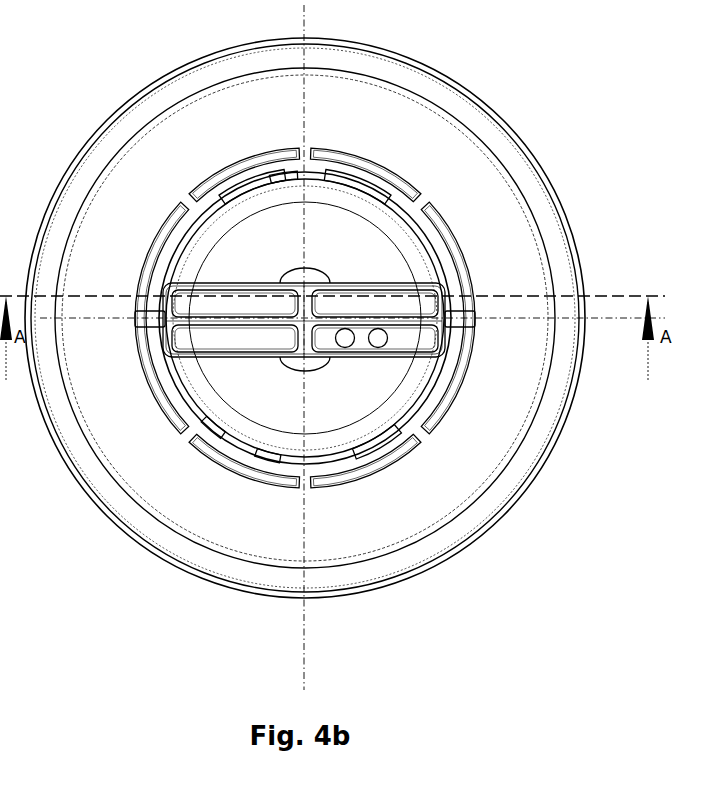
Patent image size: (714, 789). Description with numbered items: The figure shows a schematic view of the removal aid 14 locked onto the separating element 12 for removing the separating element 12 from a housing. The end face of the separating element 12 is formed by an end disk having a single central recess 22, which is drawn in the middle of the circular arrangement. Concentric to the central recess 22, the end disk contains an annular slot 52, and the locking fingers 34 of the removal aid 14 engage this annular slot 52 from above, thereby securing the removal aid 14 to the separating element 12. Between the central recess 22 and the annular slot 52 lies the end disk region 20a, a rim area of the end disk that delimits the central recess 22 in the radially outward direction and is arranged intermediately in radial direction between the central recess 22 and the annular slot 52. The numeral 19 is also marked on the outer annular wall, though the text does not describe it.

The separating element 12 is at (381, 116).
The annular wall 19 is at (235, 125).
The central recess 22 is at (310, 275).
The locking fingers 34 is at (423, 263).
The removal aid 14 is at (413, 340).
The end disk region 20a is at (330, 381).
The annular slot 52 is at (236, 438).